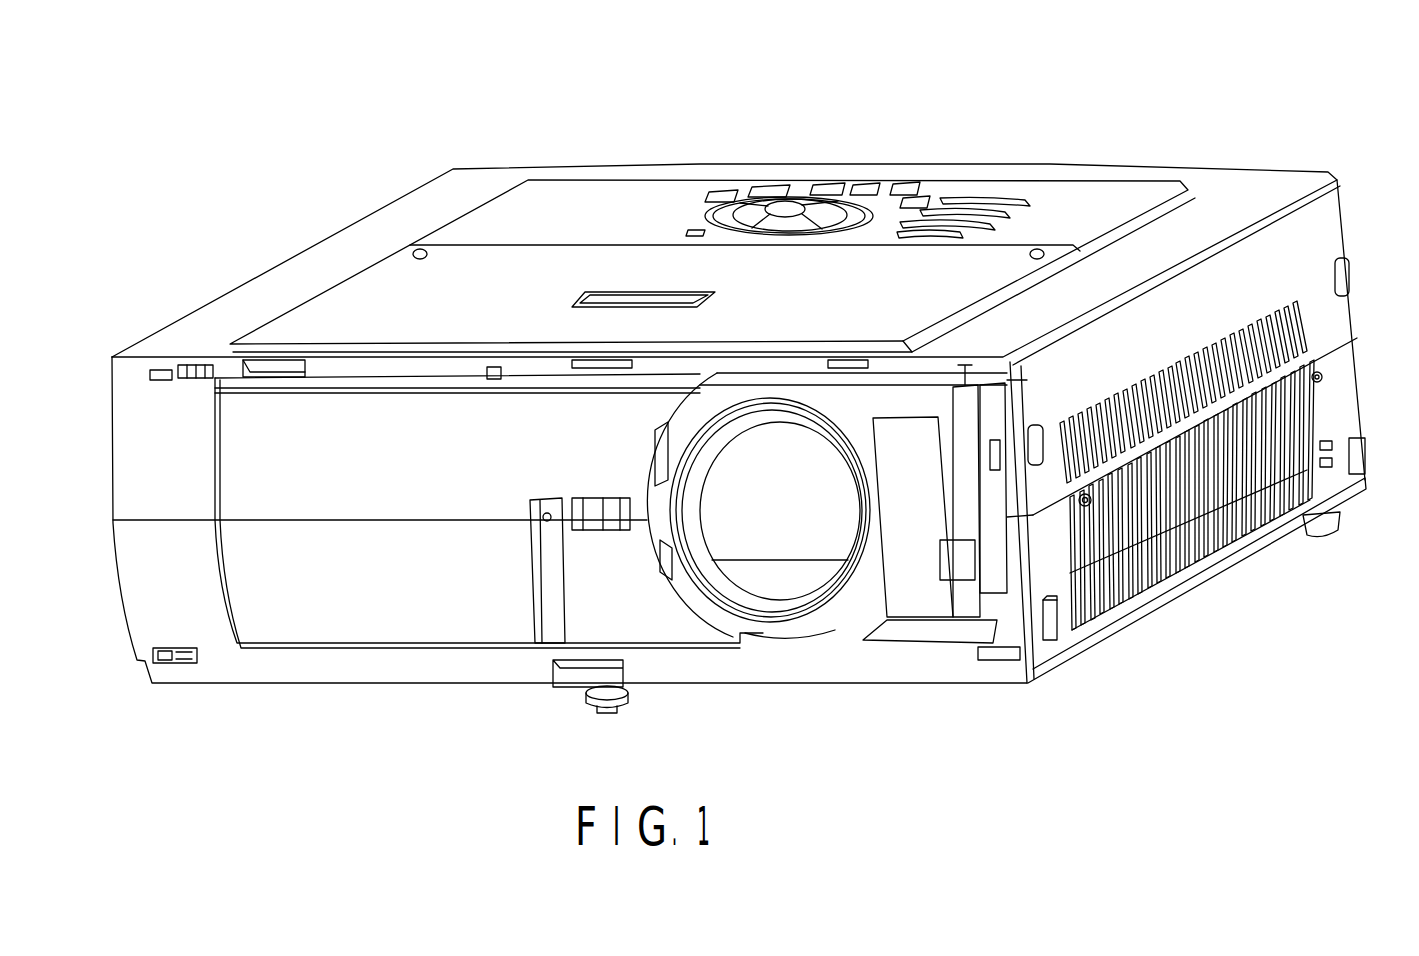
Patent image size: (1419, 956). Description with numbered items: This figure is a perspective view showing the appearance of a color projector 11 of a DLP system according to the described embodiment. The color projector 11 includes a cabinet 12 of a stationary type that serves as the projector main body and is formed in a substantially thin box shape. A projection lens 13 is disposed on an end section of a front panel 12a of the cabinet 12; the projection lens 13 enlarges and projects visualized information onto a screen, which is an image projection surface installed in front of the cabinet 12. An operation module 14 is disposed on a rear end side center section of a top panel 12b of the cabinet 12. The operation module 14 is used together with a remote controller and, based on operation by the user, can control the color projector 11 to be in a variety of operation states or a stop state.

The color projector 11 is at (1214, 100).
The cabinet 12 is at (1328, 232).
The front panel 12a is at (413, 620).
The top panel 12b is at (545, 200).
The projection lens 13 is at (768, 545).
The operation module 14 is at (800, 185).